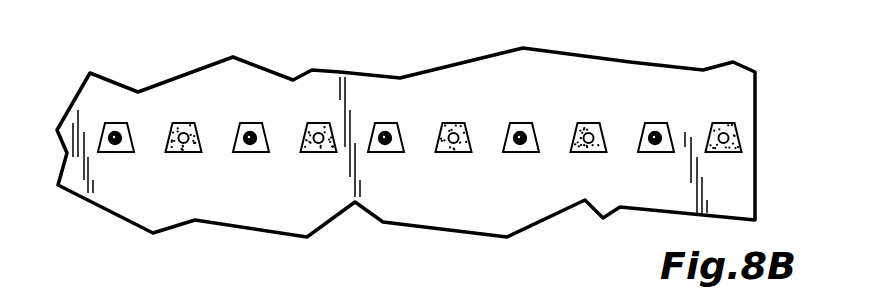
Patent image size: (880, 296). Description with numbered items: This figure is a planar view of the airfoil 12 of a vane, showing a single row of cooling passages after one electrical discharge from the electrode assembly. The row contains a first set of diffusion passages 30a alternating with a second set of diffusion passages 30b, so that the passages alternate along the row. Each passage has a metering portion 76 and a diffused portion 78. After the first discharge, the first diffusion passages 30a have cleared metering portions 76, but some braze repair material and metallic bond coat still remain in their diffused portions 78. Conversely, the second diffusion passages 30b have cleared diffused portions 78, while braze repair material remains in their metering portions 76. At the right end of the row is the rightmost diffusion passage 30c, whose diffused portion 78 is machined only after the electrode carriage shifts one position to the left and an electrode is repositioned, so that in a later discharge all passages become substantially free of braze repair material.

The airfoil 12 is at (738, 92).
The first set of diffusion passages 30a is at (310, 160).
The second set of diffusion passages 30b is at (519, 160).
The rightmost diffusion passage 30c is at (732, 160).
The metering portion 76 is at (588, 136).
The diffused portion 78 is at (607, 138).